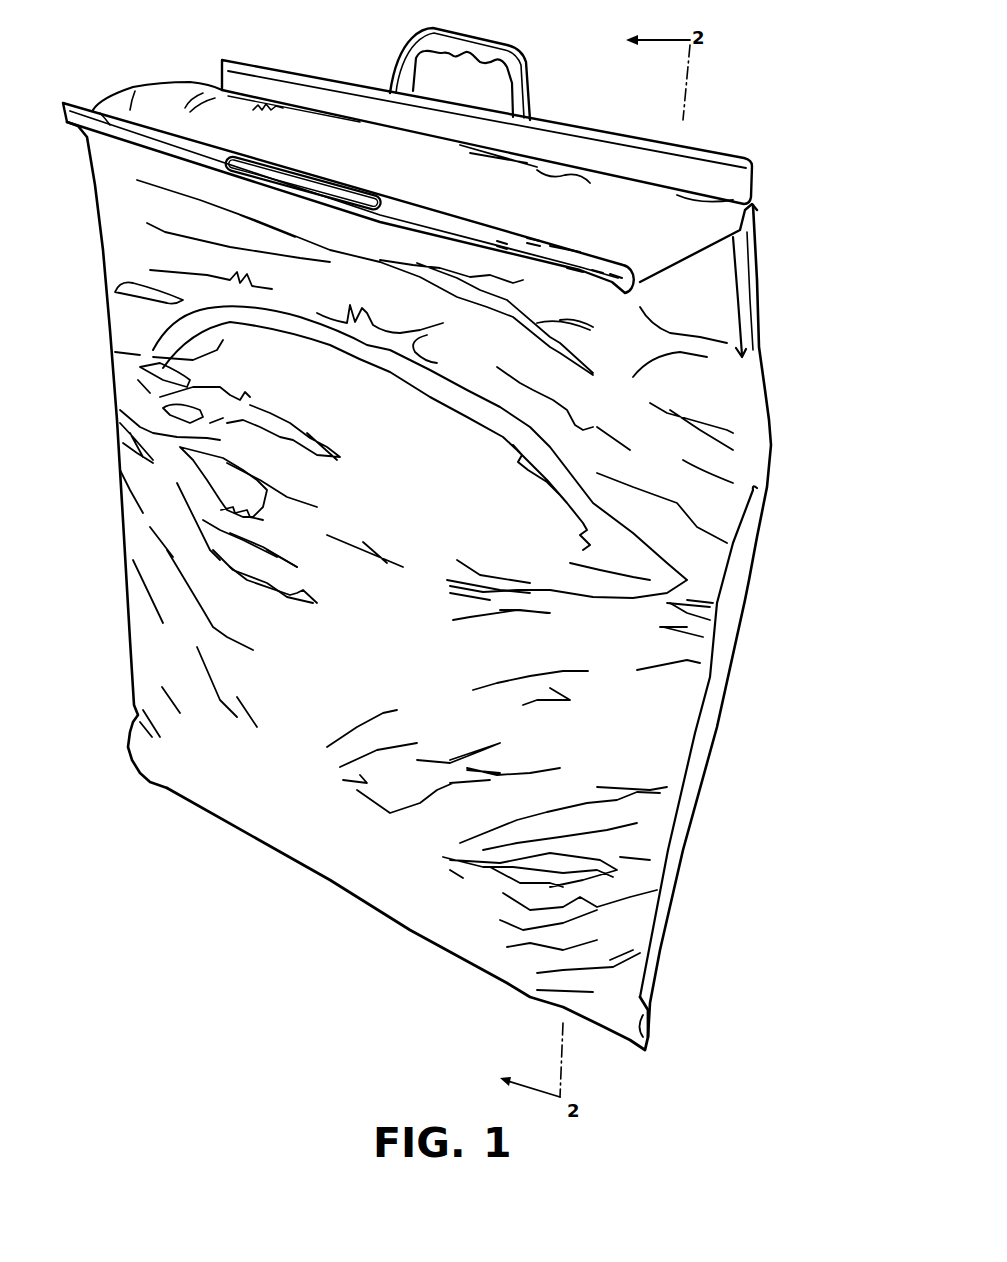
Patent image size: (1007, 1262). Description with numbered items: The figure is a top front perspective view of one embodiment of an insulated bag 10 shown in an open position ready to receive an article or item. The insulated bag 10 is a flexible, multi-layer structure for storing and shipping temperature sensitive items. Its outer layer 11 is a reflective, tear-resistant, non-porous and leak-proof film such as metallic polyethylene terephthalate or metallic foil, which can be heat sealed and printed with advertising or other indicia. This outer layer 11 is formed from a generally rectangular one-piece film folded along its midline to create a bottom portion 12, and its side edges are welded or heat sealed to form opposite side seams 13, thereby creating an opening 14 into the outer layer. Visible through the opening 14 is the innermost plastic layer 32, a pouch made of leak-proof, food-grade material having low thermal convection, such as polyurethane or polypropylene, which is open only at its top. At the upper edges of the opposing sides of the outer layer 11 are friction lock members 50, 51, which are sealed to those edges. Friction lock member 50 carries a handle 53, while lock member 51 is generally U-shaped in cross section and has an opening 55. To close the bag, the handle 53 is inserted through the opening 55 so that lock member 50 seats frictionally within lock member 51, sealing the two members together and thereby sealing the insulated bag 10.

The insulated bag 10 is at (298, 890).
The outer layer 11 is at (753, 423).
The bottom portion 12 is at (410, 925).
The side seams 13 is at (135, 91).
The opening 14 is at (727, 223).
The inner plastic layer 32 is at (300, 118).
The friction lock member 50 is at (727, 160).
The friction lock member 51 is at (583, 258).
The handle 53 is at (530, 82).
The opening 55 is at (330, 198).